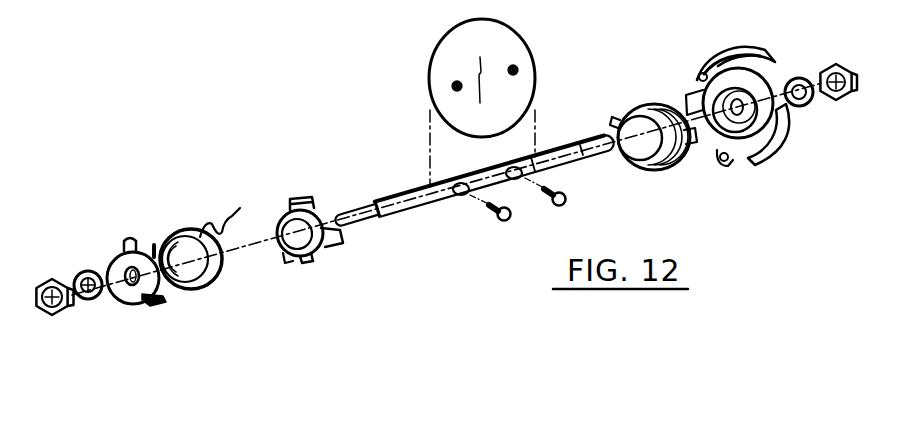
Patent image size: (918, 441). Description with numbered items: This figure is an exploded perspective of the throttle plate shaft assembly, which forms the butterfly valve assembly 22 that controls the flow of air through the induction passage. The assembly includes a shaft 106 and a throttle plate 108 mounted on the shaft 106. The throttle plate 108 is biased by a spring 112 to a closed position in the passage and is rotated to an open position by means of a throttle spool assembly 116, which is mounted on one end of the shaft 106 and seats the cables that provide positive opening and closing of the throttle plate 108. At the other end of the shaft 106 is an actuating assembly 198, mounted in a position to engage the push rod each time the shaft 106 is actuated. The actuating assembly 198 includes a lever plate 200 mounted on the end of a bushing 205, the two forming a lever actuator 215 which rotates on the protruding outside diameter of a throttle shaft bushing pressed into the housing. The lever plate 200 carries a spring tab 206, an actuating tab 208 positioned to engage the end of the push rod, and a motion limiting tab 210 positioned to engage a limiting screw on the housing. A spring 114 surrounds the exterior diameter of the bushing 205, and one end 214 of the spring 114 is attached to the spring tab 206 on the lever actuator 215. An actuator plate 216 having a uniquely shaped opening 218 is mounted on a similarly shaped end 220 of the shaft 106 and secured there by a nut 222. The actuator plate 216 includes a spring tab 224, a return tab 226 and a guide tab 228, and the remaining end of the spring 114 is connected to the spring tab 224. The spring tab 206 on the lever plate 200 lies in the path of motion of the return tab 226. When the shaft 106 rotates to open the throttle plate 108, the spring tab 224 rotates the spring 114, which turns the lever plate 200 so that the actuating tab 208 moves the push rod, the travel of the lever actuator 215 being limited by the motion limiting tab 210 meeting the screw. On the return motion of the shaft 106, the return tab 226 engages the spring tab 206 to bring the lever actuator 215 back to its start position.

The butterfly valve assembly 22 is at (512, 254).
The shaft 106 is at (421, 212).
The throttle plate 108 is at (500, 33).
The spring 112 is at (672, 160).
The spring 114 is at (213, 284).
The throttle spool assembly 116 is at (761, 178).
The actuating assembly 198 is at (166, 346).
The lever plate 200 is at (335, 208).
The bushing 205 is at (301, 263).
The spring tab 206 is at (283, 214).
The actuating tab 208 is at (300, 196).
The motion limiting tab 210 is at (336, 240).
The end of the spring 214 is at (241, 209).
The lever actuator 215 is at (324, 172).
The actuator plate 216 is at (132, 304).
The opening 218 is at (127, 283).
The end of the shaft 220 is at (368, 197).
The nut 222 is at (70, 266).
The spring tab 224 is at (124, 247).
The return tab 226 is at (133, 240).
The guide tab 228 is at (161, 302).